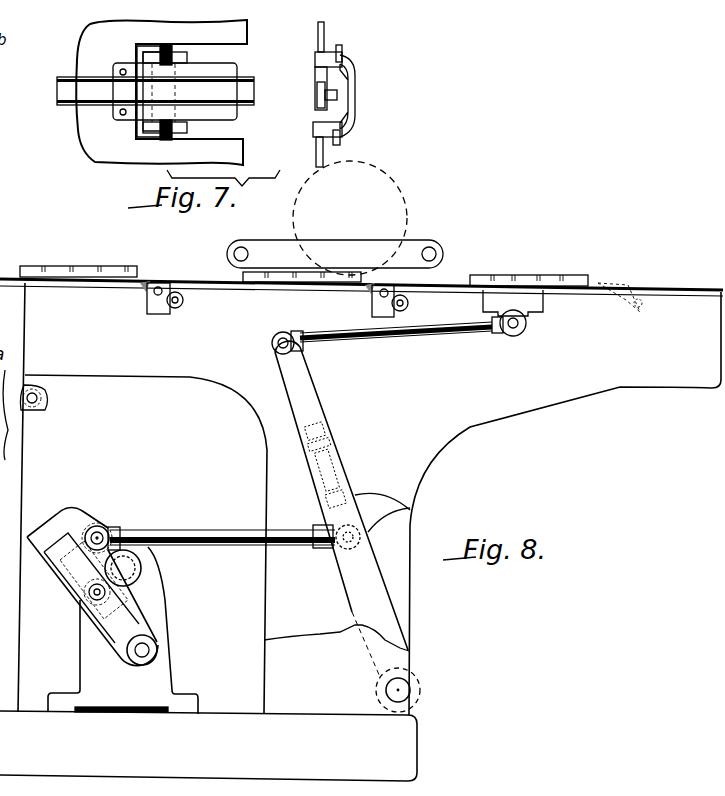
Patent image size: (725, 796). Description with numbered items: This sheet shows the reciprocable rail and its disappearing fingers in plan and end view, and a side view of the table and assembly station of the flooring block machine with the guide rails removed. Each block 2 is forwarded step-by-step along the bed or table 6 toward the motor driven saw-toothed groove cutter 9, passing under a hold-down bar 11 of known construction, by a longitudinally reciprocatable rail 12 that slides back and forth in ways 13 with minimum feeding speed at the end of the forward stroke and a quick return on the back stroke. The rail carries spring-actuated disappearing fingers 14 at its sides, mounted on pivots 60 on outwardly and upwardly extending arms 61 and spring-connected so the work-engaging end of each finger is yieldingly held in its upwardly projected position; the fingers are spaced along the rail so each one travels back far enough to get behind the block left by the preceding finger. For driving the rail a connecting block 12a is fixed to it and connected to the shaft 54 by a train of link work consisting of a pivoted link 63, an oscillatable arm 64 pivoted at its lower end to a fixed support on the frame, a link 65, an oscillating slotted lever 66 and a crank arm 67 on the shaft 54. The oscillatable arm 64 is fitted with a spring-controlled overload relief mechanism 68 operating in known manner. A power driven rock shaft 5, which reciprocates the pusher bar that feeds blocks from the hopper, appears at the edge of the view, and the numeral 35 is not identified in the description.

In FIG. 8, the block 2 is at (80, 266).
In FIG. 8, the power driven rock shaft 5 is at (3, 388).
In FIG. 8, the bed or table 6 is at (449, 277).
In FIG. 8, the groove cutter 9 is at (405, 224).
In FIG. 8, the hold-down bar 11 is at (268, 243).
In FIG. 7, the reciprocatable rail 12 is at (315, 92).
In FIG. 8, the reciprocatable rail 12 is at (196, 280).
In FIG. 8, the connecting block 12a is at (522, 302).
In FIG. 7, the way 13 is at (237, 73).
In FIG. 7, the disappearing finger 14 is at (187, 128).
In FIG. 8, the disappearing finger 14 is at (143, 285).
In FIG. 8, the frame part 35 is at (5, 216).
In FIG. 8, the shaft 54 is at (127, 567).
In FIG. 7, the pivot 60 is at (187, 53).
In FIG. 8, the pivot 60 is at (160, 294).
In FIG. 7, the arm 61 is at (137, 132).
In FIG. 8, the arm 61 is at (147, 306).
In FIG. 8, the pivoted link 63 is at (408, 338).
In FIG. 8, the oscillatable arm 64 is at (313, 406).
In FIG. 8, the link 65 is at (206, 529).
In FIG. 8, the oscillating slotted lever 66 is at (143, 612).
In FIG. 8, the crank arm 67 is at (108, 594).
In FIG. 8, the spring-controlled overload relief mechanism 68 is at (348, 470).